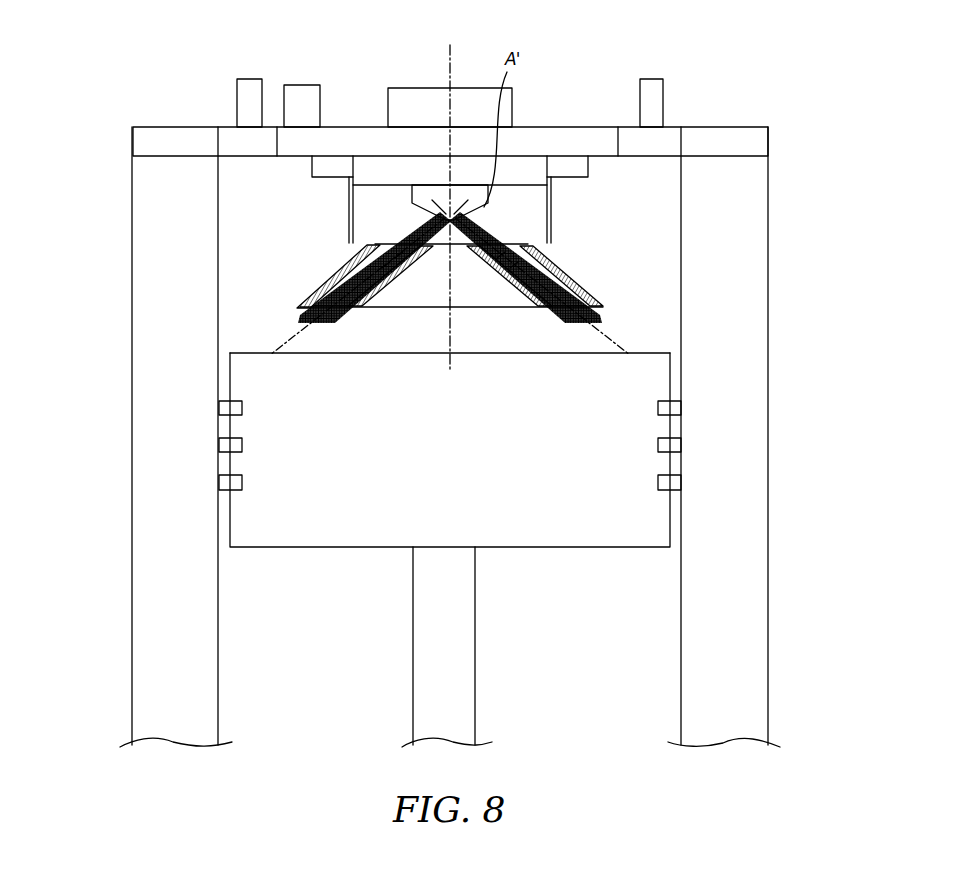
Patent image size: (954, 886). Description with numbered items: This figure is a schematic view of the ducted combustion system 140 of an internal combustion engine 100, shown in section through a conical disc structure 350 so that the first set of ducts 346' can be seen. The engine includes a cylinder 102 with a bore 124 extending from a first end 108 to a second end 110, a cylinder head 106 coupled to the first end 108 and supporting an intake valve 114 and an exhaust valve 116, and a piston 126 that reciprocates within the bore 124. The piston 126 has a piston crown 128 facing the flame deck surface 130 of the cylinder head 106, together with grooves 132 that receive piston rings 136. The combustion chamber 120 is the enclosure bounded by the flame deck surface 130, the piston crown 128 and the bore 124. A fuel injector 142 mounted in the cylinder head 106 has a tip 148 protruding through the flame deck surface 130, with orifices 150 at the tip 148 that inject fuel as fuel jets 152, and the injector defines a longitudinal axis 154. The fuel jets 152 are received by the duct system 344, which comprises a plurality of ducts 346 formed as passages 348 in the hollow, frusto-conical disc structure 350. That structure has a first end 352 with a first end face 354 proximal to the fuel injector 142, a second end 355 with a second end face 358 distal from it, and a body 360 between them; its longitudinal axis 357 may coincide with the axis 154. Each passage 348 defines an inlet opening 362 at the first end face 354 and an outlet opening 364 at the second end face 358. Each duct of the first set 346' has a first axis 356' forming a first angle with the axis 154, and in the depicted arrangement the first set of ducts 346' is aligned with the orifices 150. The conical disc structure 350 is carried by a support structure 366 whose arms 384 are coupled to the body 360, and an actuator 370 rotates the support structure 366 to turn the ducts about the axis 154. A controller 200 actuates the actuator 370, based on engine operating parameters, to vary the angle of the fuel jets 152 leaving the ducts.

The internal combustion engine 100 is at (853, 119).
The cylinder 102 is at (132, 213).
The cylinder head 106 is at (132, 143).
The first end 108 is at (132, 165).
The second end 110 is at (132, 718).
The intake valve 114 is at (237, 106).
The exhaust valve 116 is at (663, 106).
The combustion chamber 120 is at (653, 266).
The bore 124 is at (676, 217).
The piston 126 is at (670, 522).
The piston crown 128 is at (630, 353).
The flame deck surface 130 is at (590, 157).
The grooves 132 is at (681, 408).
The piston rings 136 is at (675, 417).
The ducted combustion system 140 is at (612, 234).
The fuel injector 142 is at (513, 103).
The tip 148 is at (413, 199).
The orifices 150 is at (430, 200).
The fuel jets 152 is at (513, 223).
The longitudinal axis 154 is at (450, 66).
The controller 200 is at (298, 86).
The duct system 344 is at (594, 288).
The plurality of ducts 346 is at (451, 277).
The first set of ducts 346' is at (418, 290).
The passages 348 is at (399, 285).
The conical disc structure 350 is at (600, 307).
The first end 352 is at (507, 243).
The first end face 354 is at (392, 253).
The second end 355 is at (312, 288).
The first axis 356' is at (432, 320).
The longitudinal axis 357 is at (458, 368).
The second end face 358 is at (303, 307).
The body 360 is at (563, 272).
The opening 362 is at (387, 243).
The opening 364 is at (330, 311).
The support structure 366 is at (558, 200).
The actuator 370 is at (312, 163).
The arms 384 is at (570, 188).